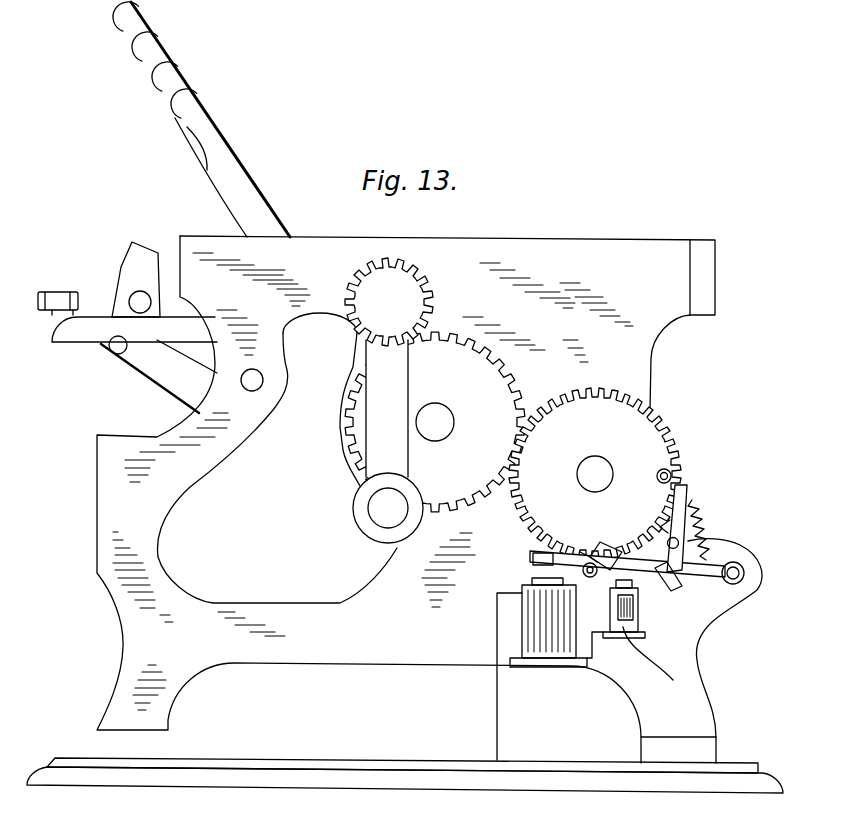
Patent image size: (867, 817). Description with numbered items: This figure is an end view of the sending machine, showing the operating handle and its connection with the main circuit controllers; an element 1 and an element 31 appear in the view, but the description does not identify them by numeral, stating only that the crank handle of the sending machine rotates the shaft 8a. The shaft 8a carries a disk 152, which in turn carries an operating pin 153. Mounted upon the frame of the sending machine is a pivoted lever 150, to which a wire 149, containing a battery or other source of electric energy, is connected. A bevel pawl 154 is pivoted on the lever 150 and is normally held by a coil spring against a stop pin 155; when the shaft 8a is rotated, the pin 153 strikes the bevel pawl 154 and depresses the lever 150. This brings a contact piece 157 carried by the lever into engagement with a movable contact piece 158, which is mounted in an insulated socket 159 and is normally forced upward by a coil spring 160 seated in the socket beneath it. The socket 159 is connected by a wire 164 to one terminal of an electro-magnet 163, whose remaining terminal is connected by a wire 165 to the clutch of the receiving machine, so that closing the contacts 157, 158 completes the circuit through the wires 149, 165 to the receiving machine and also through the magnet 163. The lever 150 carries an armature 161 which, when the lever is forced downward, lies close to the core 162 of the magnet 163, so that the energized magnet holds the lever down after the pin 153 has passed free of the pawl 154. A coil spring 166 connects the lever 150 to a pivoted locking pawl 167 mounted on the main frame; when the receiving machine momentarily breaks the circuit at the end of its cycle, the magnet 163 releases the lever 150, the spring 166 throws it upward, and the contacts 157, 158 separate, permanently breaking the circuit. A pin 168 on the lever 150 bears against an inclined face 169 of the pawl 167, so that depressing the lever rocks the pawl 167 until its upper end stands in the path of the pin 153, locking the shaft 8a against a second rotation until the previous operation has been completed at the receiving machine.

The handle lever 1 is at (128, 33).
The lever arm 31 is at (80, 330).
The shaft 8a is at (591, 460).
The disk 152 is at (576, 479).
The operating pin 153 is at (672, 468).
The pivoted locking pawl 167 is at (688, 493).
The coil spring 166 is at (700, 523).
The stop pin 155 is at (540, 527).
The bevel pawl 154 is at (597, 548).
The pivoted lever 150 is at (617, 547).
The wire 164 is at (540, 563).
The core 162 is at (527, 583).
The contact piece 157 is at (572, 600).
The pin 168 is at (672, 575).
The inclined face 169 is at (668, 603).
The movable contact piece 158 is at (642, 620).
The coil spring 160 is at (633, 623).
The armature 161 is at (592, 643).
The insulated socket 159 is at (651, 662).
The electro-magnet 163 is at (550, 640).
The wire 165 is at (497, 690).
The wire 149 is at (735, 585).